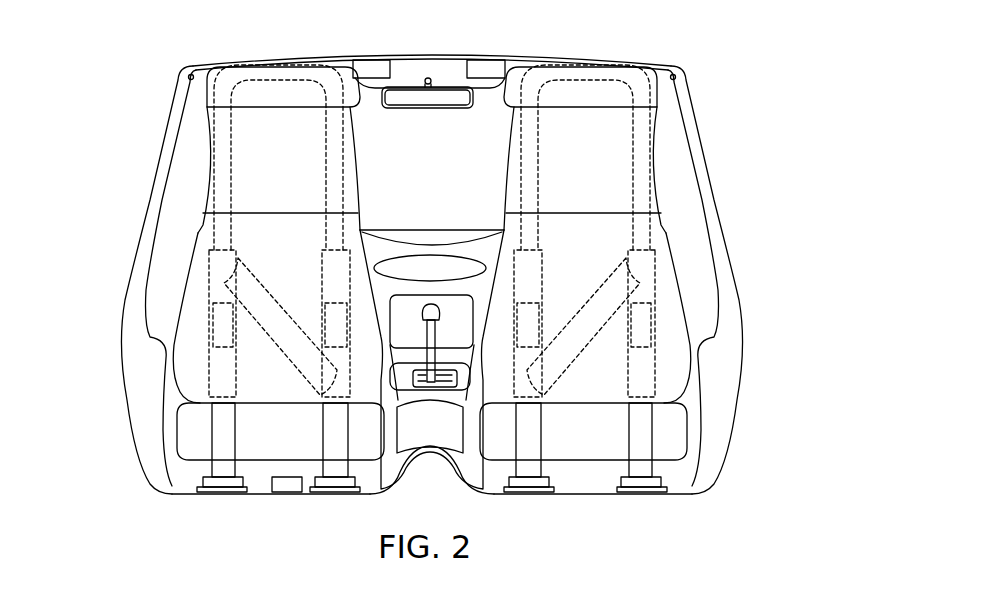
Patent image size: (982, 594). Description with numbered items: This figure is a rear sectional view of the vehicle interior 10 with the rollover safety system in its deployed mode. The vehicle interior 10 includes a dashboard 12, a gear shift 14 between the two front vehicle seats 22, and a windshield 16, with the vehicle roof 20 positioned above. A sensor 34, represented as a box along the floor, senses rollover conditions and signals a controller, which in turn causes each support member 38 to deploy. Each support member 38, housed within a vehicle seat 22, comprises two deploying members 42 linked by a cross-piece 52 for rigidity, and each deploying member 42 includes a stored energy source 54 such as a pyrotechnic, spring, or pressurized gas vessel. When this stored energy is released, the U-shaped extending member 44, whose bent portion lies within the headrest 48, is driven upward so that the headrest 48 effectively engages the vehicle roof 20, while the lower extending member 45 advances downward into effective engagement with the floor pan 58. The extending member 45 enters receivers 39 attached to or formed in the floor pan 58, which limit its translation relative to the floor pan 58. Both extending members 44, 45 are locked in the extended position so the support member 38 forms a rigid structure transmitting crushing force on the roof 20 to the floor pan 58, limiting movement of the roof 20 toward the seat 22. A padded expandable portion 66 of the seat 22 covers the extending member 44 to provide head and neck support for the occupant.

The vehicle interior 10 is at (672, 170).
The dashboard 12 is at (373, 243).
The gear shift 14 is at (450, 337).
The windshield 16 is at (417, 174).
The vehicle roof 20 is at (425, 52).
The front vehicle seat 22 is at (195, 287).
The sensor 34 is at (290, 483).
The support member 38 is at (215, 378).
The receiver 39 is at (223, 482).
The deploying member 42 is at (332, 275).
The extending member 44 is at (338, 160).
The extending member 45 is at (223, 445).
The headrest 48 is at (340, 68).
The cross-piece 52 is at (262, 303).
The stored energy source 54 is at (208, 313).
The floor pan 58 is at (368, 494).
The padded expandable portion 66 is at (207, 193).